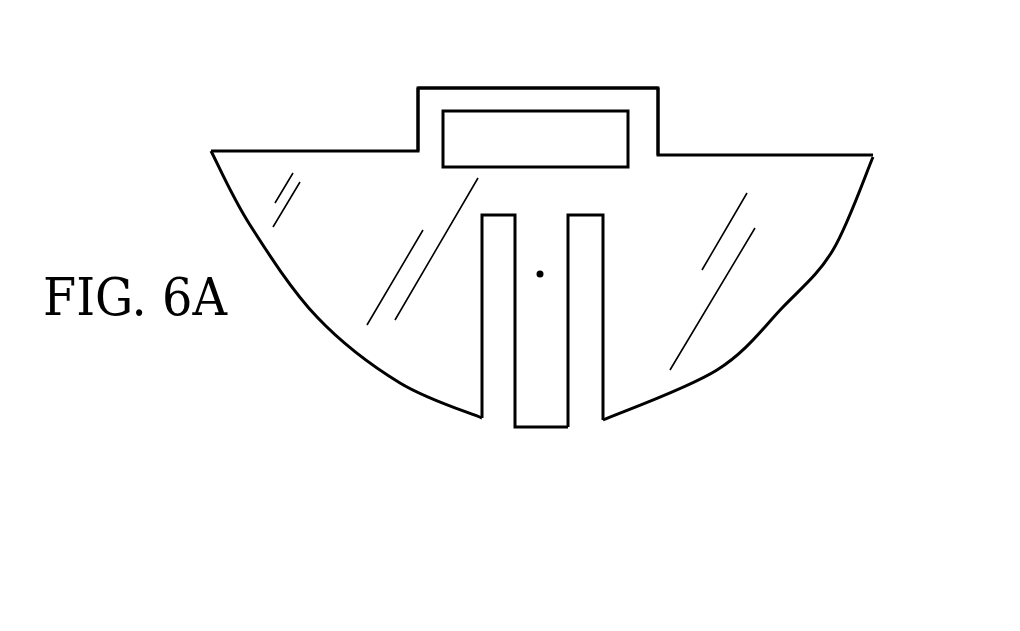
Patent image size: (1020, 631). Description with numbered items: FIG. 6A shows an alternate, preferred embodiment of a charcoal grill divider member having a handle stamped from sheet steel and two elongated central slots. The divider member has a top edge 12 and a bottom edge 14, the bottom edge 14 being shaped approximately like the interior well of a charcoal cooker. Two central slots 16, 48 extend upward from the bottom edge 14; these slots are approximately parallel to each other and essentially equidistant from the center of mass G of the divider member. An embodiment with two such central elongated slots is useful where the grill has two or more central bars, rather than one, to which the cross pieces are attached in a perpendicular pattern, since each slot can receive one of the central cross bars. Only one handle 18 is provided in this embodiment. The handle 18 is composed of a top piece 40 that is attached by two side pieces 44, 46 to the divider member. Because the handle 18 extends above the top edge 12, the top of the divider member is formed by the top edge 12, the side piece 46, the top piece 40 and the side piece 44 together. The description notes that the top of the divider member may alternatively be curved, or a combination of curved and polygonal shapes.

The top edge 12 is at (808, 157).
The bottom edge 14 is at (713, 368).
The central slot 16 is at (497, 410).
The handle 18 is at (498, 112).
The top piece 40 is at (622, 88).
The side piece 44 is at (418, 108).
The side piece 46 is at (660, 112).
The central slot 48 is at (587, 405).
The center of mass G is at (540, 271).